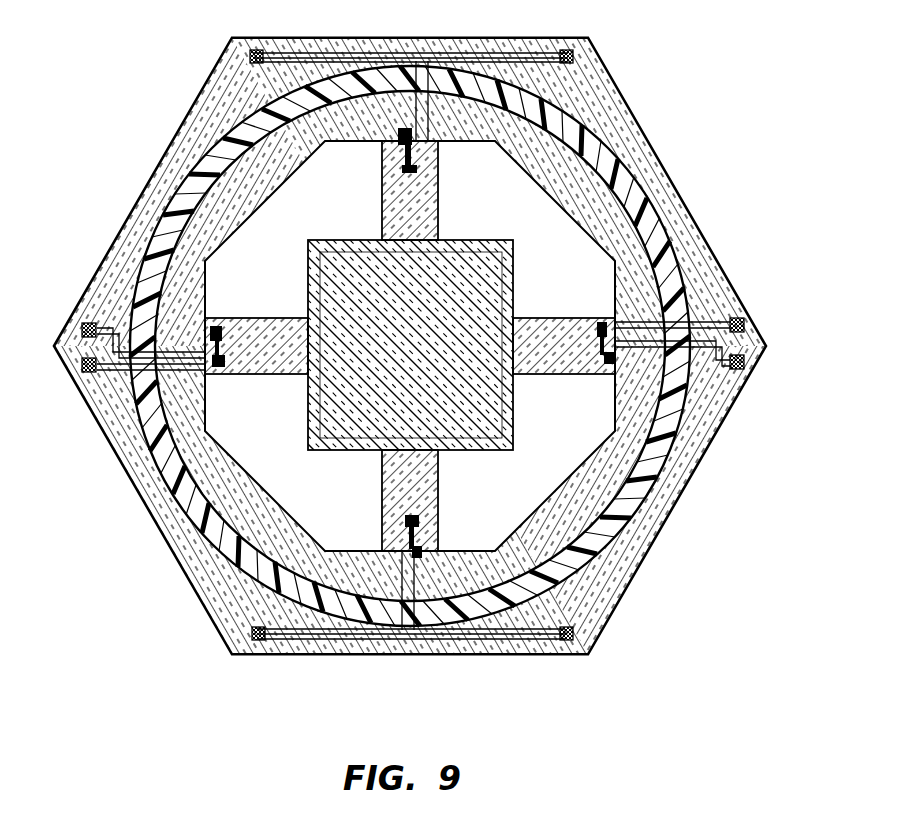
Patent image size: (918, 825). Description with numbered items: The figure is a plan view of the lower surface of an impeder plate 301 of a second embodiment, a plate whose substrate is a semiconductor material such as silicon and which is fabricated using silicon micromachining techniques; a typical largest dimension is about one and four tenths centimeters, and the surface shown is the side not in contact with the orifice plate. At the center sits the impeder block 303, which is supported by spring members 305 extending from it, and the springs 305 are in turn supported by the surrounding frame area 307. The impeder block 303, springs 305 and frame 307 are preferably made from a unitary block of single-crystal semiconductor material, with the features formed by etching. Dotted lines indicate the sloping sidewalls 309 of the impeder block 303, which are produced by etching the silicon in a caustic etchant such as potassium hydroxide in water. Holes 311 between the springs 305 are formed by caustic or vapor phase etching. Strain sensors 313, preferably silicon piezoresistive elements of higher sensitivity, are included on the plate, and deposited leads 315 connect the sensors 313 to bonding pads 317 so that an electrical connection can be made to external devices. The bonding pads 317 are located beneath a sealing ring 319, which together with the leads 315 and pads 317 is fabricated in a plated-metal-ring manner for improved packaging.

The impeder plate 301 is at (172, 640).
The impeder block 303 is at (372, 432).
The spring members 305 is at (387, 194).
The frame area 307 is at (212, 566).
The sloping sidewalls 309 is at (612, 300).
The holes 311 is at (172, 458).
The strain sensors 313 is at (722, 410).
The leads 315 is at (421, 640).
The bonding pads 317 is at (273, 641).
The sealing ring 319 is at (204, 186).